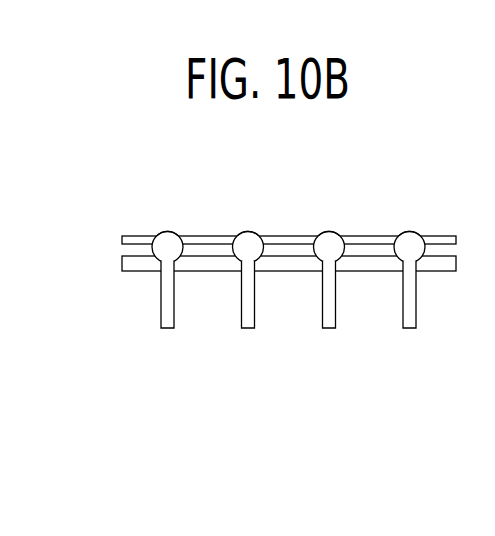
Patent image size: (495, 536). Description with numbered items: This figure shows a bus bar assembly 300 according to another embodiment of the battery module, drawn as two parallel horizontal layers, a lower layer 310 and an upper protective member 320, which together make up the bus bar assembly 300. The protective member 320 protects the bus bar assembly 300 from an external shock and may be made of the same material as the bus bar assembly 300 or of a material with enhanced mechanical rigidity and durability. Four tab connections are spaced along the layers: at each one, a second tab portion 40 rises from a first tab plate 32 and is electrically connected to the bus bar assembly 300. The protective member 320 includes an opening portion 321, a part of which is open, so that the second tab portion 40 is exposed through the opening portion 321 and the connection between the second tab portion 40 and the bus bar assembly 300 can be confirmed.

The bus bar assembly 300 is at (256, 327).
The first conductive layer 310 is at (122, 263).
The protective member 320 is at (122, 241).
The opening portion 321 is at (158, 231).
The second tab portion 40 is at (170, 232).
The first tab plate 32 is at (163, 300).